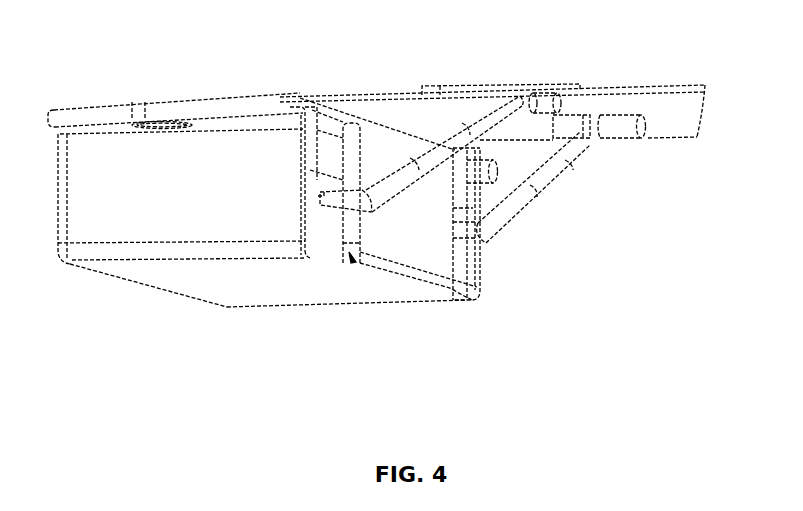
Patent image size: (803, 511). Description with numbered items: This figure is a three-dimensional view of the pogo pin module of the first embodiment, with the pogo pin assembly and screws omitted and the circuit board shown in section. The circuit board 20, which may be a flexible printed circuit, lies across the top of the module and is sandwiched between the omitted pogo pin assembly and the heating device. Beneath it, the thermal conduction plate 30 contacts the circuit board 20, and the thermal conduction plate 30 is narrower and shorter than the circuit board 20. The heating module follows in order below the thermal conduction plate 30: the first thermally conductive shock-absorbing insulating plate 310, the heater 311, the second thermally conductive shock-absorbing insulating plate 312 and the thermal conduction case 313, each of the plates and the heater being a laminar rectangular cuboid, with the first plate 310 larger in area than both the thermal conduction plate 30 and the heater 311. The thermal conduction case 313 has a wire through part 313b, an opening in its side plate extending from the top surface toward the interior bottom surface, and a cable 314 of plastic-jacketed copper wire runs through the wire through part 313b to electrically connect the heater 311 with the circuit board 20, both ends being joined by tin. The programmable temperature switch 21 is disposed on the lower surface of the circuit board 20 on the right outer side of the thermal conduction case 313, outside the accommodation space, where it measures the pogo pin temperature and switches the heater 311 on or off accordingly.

The circuit board 20 is at (443, 93).
The programmable temperature switch 21 is at (577, 127).
The thermal conduction plate 30 is at (323, 118).
The first thermally conductive shock-absorbing insulating plate 310 is at (330, 148).
The heater 311 is at (318, 185).
The second thermally conductive shock-absorbing insulating plate 312 is at (322, 222).
The thermal conduction case 313 is at (415, 277).
The wire through part 313b is at (350, 240).
The cable 314 is at (508, 212).